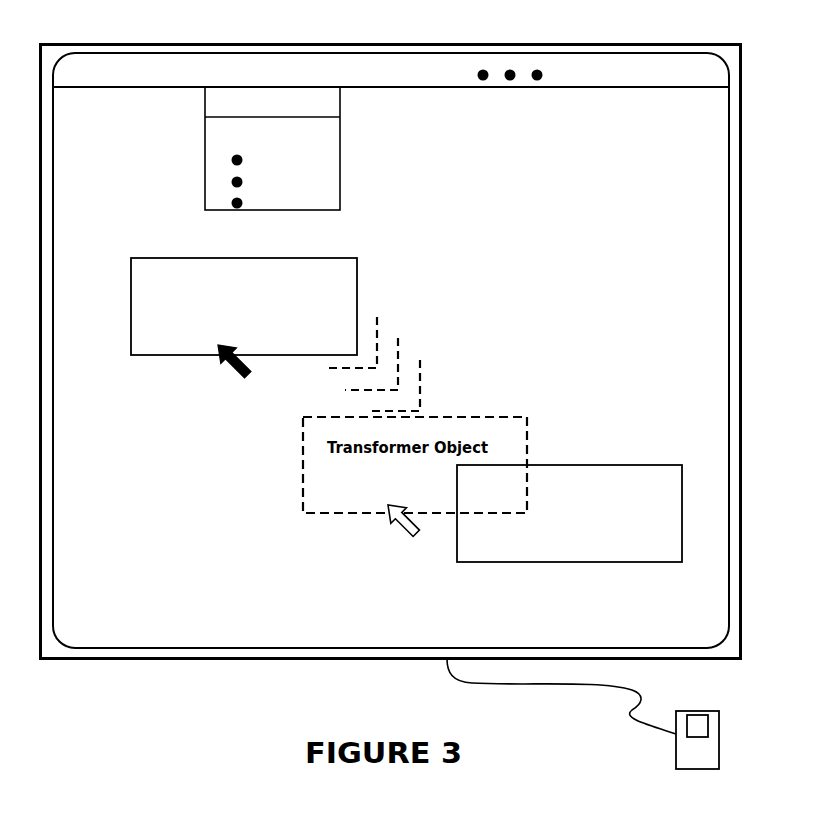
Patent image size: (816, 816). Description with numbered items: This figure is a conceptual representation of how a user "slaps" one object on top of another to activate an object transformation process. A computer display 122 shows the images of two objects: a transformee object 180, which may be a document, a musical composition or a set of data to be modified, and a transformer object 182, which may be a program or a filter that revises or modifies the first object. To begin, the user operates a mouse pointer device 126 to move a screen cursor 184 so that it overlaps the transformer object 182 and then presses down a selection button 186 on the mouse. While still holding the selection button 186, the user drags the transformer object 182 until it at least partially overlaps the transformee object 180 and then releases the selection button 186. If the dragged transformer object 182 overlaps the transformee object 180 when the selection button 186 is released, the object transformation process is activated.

The computer display 122 is at (165, 44).
The mouse pointer device 126 is at (676, 758).
The transformee object 180 is at (591, 465).
The transformer object 182 is at (328, 257).
The screen cursor 184 is at (233, 373).
The selection button 186 is at (697, 716).